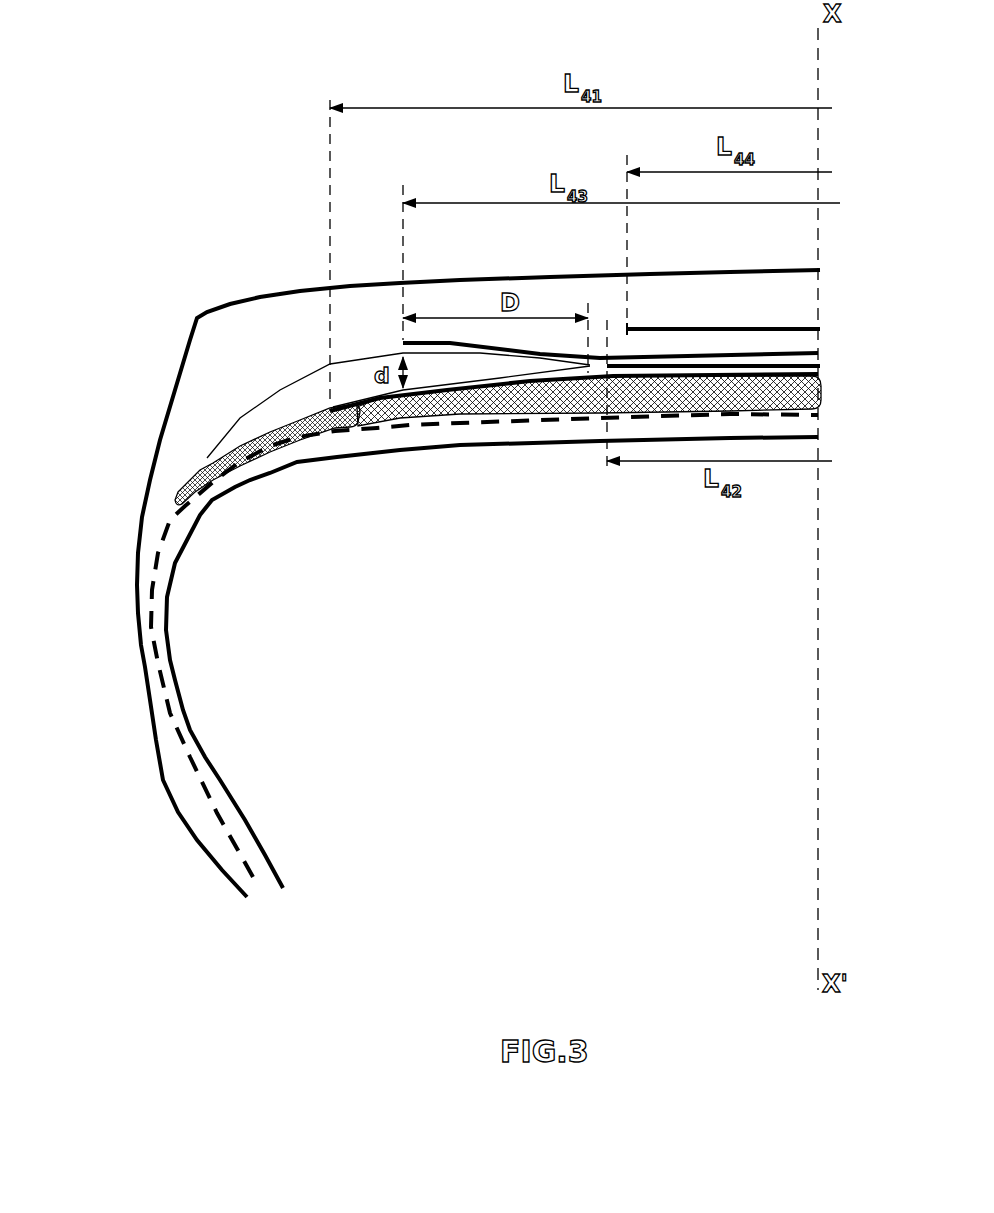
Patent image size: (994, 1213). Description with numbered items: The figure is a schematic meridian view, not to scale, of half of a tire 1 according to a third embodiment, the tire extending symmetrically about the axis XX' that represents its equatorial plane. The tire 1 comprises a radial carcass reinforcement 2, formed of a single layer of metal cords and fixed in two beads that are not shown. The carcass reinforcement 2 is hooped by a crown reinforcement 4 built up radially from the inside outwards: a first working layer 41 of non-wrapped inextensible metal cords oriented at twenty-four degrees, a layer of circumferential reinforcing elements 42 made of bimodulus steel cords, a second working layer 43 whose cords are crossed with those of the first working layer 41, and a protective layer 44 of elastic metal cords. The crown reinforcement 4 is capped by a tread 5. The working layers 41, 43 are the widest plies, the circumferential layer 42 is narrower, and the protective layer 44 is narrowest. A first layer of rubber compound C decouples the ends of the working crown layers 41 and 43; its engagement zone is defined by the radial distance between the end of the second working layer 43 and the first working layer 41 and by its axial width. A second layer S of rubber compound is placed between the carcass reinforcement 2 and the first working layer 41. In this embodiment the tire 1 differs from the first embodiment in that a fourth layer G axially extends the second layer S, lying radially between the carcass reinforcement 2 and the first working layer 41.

The tire 1 is at (103, 280).
The radial carcass reinforcement 2 is at (160, 542).
The crown reinforcement 4 is at (618, 349).
The first working layer 41 is at (748, 379).
The layer of circumferential reinforcing elements 42 is at (773, 364).
The second working layer 43 is at (572, 353).
The protective layer 44 is at (633, 323).
The tread 5 is at (722, 287).
The second layer of rubber compound S is at (277, 428).
The first layer of rubber compound C is at (447, 381).
The fourth layer G is at (560, 405).